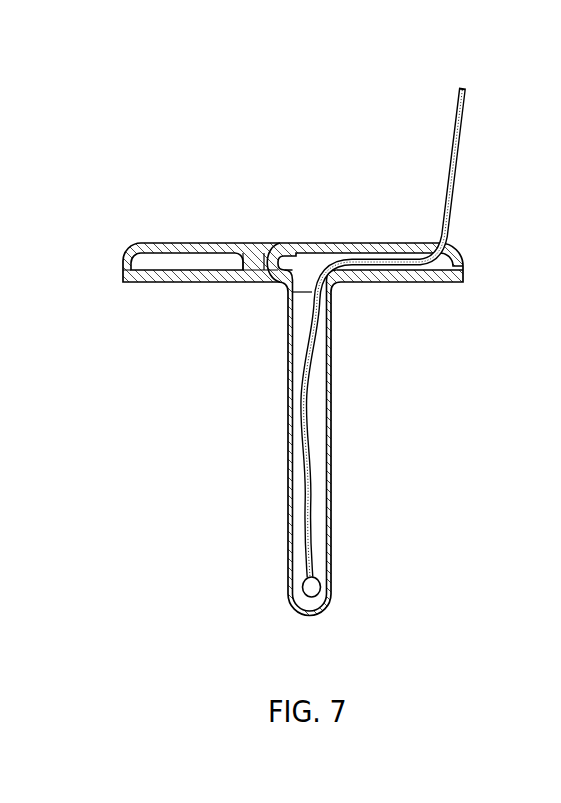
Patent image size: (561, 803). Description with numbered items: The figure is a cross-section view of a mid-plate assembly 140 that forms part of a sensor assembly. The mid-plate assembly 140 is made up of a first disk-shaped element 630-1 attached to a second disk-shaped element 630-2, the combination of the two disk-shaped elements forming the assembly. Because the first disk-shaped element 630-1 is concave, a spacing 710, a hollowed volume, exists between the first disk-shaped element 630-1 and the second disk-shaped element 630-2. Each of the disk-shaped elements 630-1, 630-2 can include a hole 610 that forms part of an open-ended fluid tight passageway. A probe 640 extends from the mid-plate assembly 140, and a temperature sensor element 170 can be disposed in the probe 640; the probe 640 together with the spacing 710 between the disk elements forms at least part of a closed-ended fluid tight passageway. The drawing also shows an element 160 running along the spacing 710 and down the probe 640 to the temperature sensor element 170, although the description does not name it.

The mid-plate assembly 140 is at (142, 94).
The strap 160 is at (458, 170).
The temperature sensor element 170 is at (302, 594).
The hole 610 is at (232, 233).
The first disk-shaped element 630-1 is at (372, 256).
The second disk-shaped element 630-2 is at (166, 283).
The probe 640 is at (290, 466).
The spacing 710 is at (293, 254).